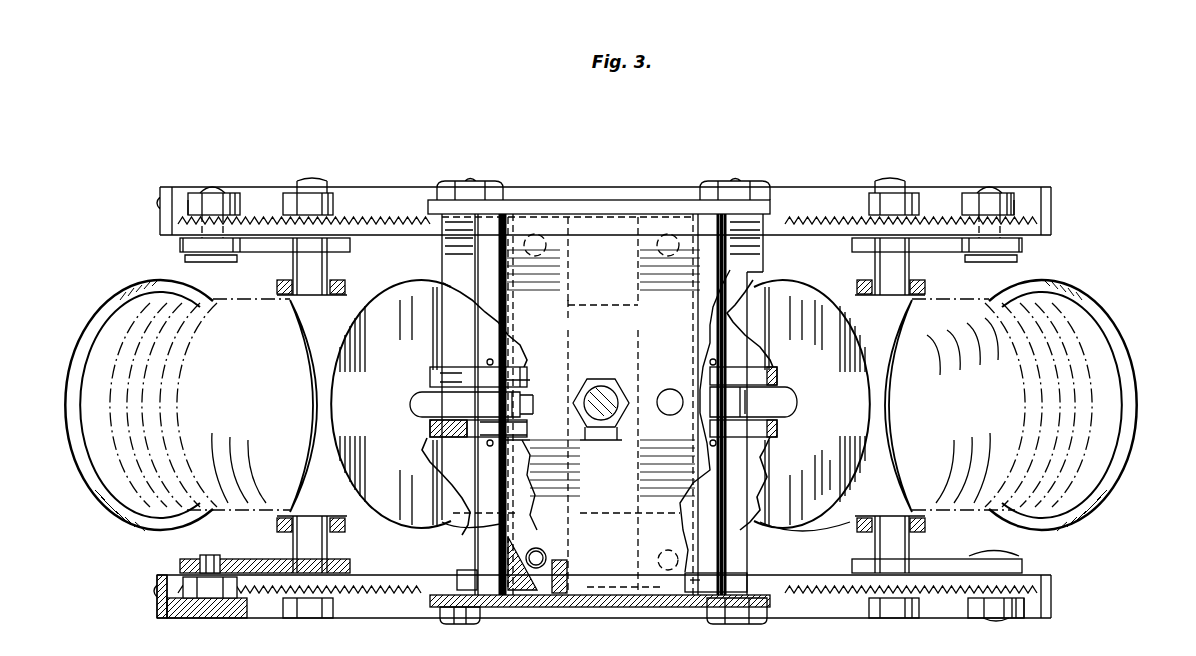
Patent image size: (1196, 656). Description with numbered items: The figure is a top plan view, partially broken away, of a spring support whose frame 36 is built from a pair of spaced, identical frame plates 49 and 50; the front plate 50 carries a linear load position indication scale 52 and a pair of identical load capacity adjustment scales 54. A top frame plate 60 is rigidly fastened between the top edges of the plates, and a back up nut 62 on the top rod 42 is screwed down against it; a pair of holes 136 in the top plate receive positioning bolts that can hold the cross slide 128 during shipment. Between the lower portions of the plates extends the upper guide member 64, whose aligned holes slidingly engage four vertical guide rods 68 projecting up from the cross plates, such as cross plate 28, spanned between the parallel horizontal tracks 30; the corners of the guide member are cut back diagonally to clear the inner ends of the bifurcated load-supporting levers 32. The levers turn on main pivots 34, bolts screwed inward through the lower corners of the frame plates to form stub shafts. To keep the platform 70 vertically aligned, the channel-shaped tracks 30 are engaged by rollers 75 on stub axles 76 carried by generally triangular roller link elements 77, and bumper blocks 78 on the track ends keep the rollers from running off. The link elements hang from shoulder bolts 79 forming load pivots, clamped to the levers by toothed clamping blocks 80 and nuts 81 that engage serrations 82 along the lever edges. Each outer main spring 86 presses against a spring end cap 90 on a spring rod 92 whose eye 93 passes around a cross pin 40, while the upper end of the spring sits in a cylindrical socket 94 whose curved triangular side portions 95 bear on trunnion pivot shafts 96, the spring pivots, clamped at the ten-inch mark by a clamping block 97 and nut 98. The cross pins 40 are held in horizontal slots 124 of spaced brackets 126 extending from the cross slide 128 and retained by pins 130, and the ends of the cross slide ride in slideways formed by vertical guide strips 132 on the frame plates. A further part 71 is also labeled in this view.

The cross plate 28 is at (740, 522).
The horizontal track 30 is at (380, 188).
The load-supporting lever 32 is at (1040, 215).
The main pivot 34 is at (462, 181).
The frame 36 is at (618, 170).
The cross pin pivot 40 is at (508, 333).
The top rod 42 is at (598, 427).
The rear frame plate 49 is at (430, 200).
The front frame plate 50 is at (465, 600).
The linear load position indication scale 52 is at (620, 607).
The load capacity adjustment scale 54 is at (695, 625).
The top frame plate 60 is at (442, 266).
The back up nut 62 is at (616, 440).
The upper guide member 64 is at (525, 488).
The vertical guide rod 68 is at (535, 257).
The platform 70 is at (453, 530).
The support block 71 is at (598, 607).
The roller 75 is at (200, 598).
The stub axle 76 is at (212, 557).
The roller link element 77 is at (180, 245).
The bumper block 78 is at (160, 226).
The shoulder bolt 79 is at (215, 186).
The toothed clamping block 80 is at (232, 213).
The nut 81 is at (190, 193).
The serrations 82 is at (800, 218).
The outer main spring 86 is at (115, 432).
The spring end cap 90 is at (92, 330).
The spring rod 92 is at (428, 403).
The eye 93 is at (538, 395).
The cylindrical socket 94 is at (400, 309).
The curved triangular side portion 95 is at (356, 295).
The trunnion pivot shaft 96 is at (292, 266).
The clamping block 97 is at (330, 217).
The nut 98 is at (308, 181).
The horizontal slot 124 is at (430, 376).
The bracket 126 is at (430, 384).
The cross slide 128 is at (568, 315).
The pin 130 is at (488, 360).
The vertical guide strip 132 is at (566, 217).
The hole 136 is at (668, 390).